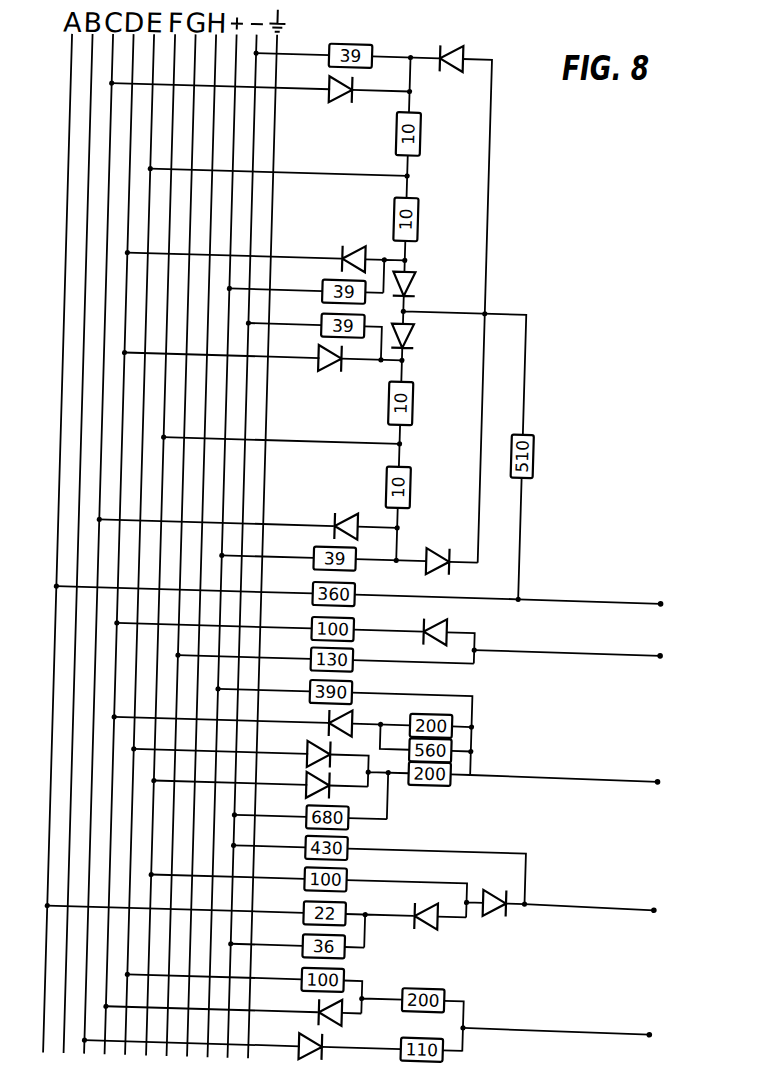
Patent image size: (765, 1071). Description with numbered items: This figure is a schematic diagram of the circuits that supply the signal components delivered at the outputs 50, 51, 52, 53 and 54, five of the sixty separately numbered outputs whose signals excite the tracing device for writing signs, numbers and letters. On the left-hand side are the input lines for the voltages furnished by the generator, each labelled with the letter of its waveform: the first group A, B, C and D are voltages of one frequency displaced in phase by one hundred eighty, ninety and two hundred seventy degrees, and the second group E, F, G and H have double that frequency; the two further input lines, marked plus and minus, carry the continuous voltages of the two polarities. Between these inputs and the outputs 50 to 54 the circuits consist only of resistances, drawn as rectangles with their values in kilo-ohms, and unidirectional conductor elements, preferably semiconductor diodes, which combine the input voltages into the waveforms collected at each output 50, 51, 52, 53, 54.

The output 50 is at (591, 590).
The output 51 is at (569, 642).
The output 52 is at (565, 768).
The output 53 is at (590, 897).
The output 54 is at (558, 1022).